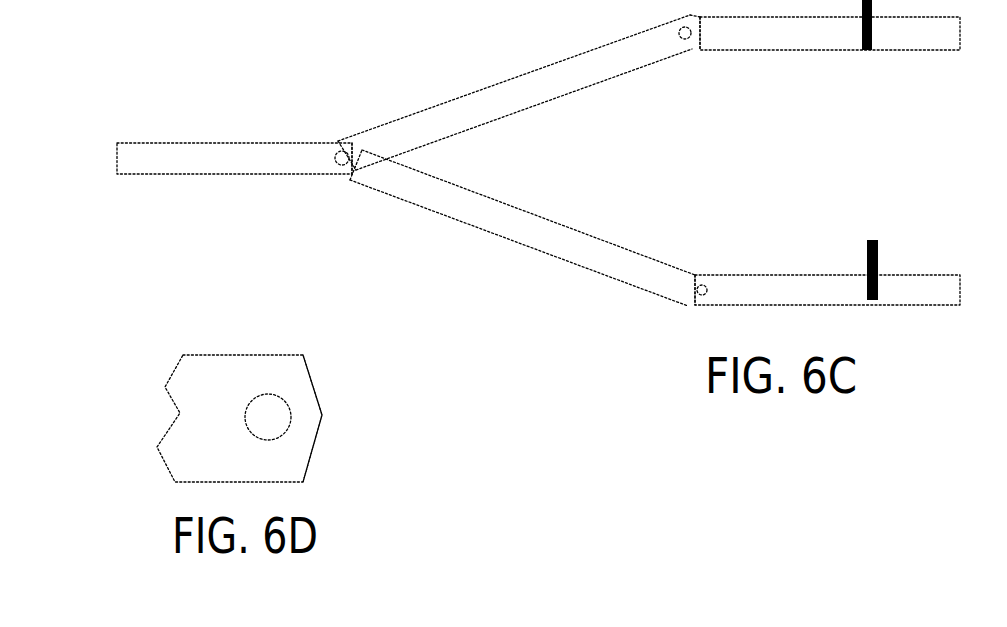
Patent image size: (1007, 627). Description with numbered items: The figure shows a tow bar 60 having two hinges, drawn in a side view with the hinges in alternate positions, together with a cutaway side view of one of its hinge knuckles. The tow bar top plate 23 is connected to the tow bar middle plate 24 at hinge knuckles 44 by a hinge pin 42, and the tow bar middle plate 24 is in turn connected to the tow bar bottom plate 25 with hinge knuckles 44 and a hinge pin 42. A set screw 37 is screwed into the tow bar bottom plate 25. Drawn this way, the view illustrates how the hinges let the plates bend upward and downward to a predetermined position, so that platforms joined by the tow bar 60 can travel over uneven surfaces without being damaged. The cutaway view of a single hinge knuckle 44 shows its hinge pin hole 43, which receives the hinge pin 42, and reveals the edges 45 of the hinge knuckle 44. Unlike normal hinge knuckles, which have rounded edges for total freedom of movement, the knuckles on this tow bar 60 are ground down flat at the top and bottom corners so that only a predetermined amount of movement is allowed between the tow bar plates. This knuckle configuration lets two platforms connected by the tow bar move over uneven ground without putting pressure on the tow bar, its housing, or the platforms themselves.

In FIG. 6C, the tow bar top plate 23 is at (193, 153).
In FIG. 6C, the tow bar middle plate 24 is at (490, 100).
In FIG. 6C, the tow bar bottom plate 25 is at (822, 32).
In FIG. 6C, the set screw 37 is at (873, 50).
In FIG. 6C, the hinge pin 42 is at (337, 157).
In FIG. 6D, the hinge pin hole 43 is at (268, 417).
In FIG. 6C, the hinge knuckle 44 is at (345, 168).
In FIG. 6D, the hinge knuckle 44 is at (260, 380).
In FIG. 6C, the edges 45 is at (707, 44).
In FIG. 6D, the edges 45 is at (317, 378).
In FIG. 6C, the tow bar 60 is at (114, 160).
In FIG. 6D, the tow bar 60 is at (128, 432).